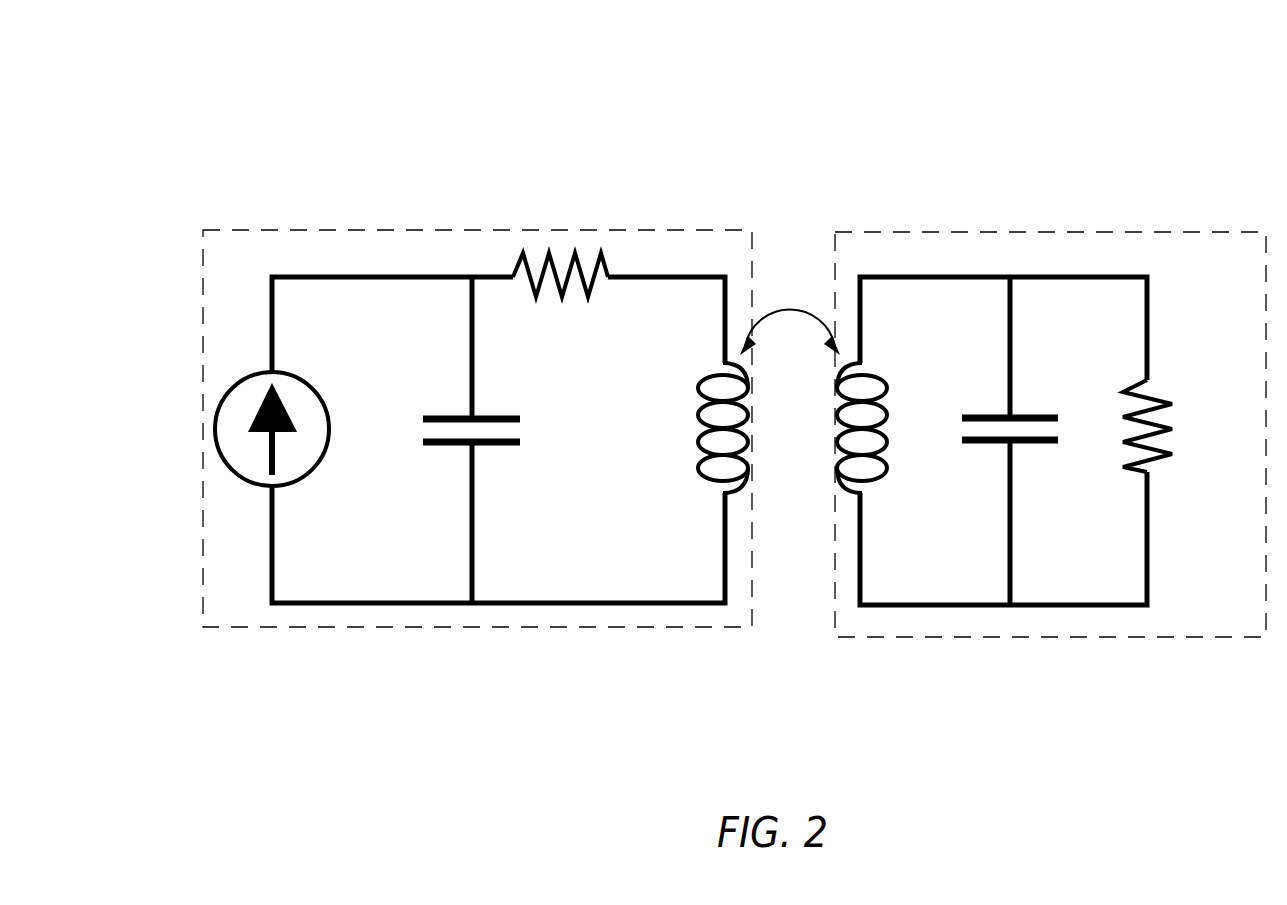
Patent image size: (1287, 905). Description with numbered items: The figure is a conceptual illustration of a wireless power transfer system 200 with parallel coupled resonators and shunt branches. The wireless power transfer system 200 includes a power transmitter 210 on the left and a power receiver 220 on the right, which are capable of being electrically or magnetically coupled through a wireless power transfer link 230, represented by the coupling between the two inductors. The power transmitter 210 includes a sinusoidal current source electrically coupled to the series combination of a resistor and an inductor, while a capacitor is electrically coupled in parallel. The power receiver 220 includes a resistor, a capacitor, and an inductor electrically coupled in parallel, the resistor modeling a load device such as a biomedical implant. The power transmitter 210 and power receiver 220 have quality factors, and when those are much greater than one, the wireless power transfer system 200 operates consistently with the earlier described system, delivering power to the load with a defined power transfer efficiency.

The wireless power transfer system 200 is at (1105, 100).
The power transmitter 210 is at (427, 230).
The power receiver 220 is at (1020, 232).
The wireless power transfer link 230 is at (805, 287).